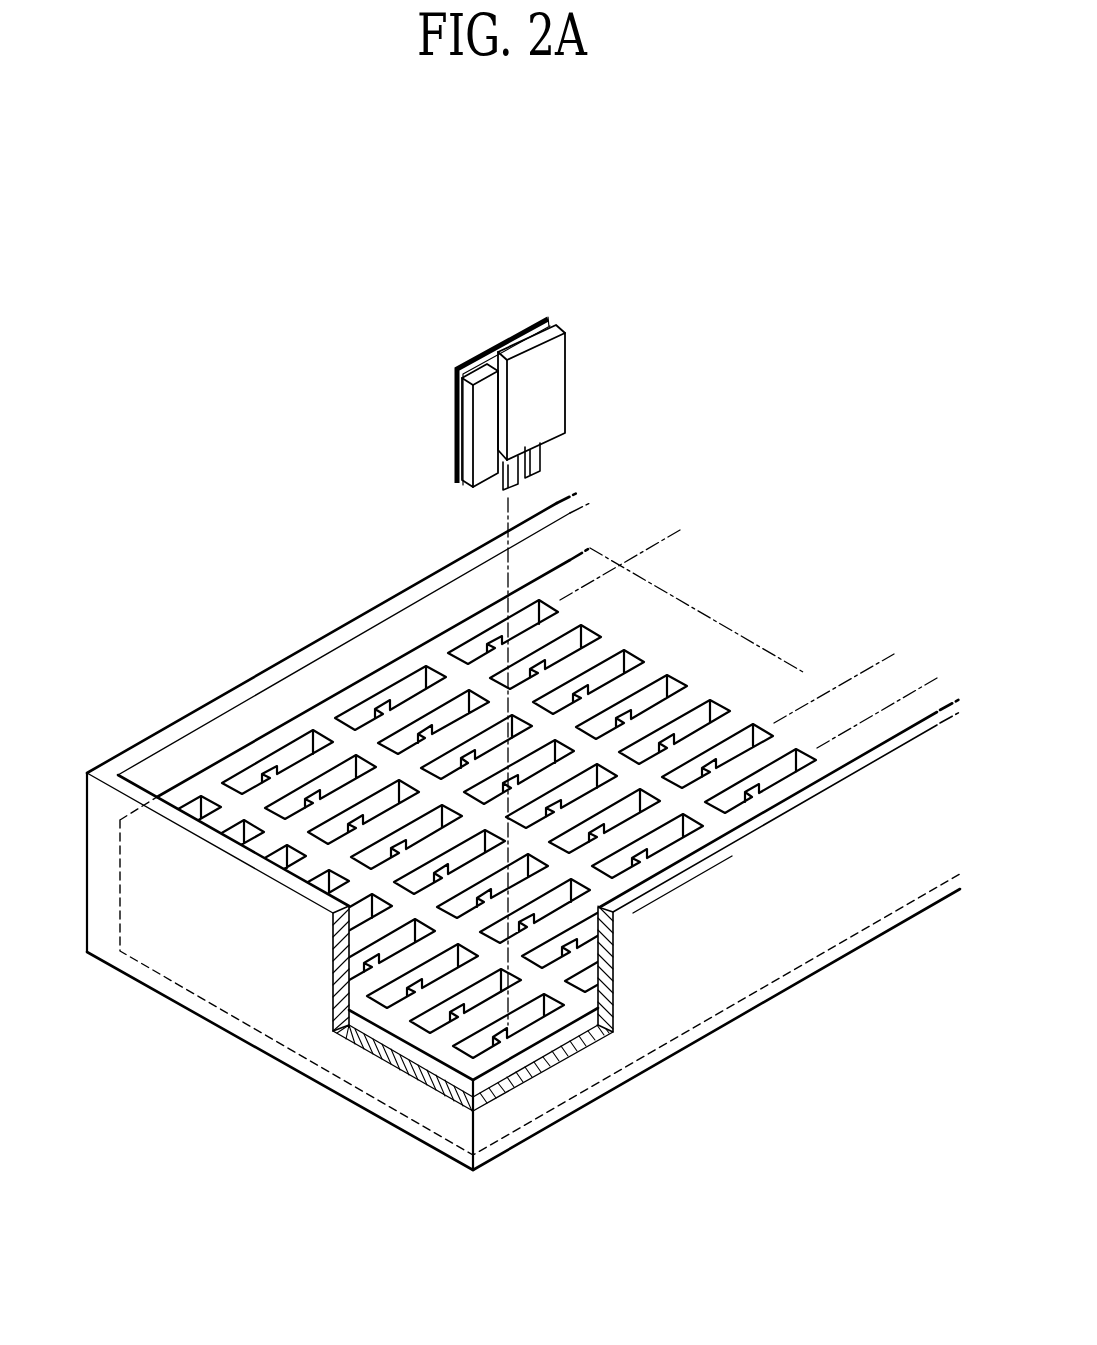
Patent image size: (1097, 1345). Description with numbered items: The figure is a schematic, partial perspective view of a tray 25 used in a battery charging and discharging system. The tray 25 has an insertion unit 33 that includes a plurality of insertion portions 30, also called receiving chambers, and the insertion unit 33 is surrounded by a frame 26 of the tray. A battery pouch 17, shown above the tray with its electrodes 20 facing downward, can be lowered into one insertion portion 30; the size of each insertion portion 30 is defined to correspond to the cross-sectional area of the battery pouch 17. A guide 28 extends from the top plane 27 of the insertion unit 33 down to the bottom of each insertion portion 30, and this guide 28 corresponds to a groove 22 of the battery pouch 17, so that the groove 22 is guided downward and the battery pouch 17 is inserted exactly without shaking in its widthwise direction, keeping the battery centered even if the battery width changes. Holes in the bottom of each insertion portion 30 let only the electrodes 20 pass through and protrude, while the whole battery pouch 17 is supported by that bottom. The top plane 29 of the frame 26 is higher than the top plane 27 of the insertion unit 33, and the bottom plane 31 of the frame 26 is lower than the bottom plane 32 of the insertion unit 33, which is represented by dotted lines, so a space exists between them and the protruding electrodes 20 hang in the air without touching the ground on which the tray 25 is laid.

The battery pouch 17 is at (579, 351).
The electrodes 20 is at (533, 459).
The groove 22 is at (489, 350).
The tray 25 is at (299, 609).
The frame 26 is at (234, 990).
The top plane 27 is at (448, 1054).
The guide 28 is at (267, 773).
The top plane 29 is at (160, 797).
The insertion portion 30 is at (403, 698).
The bottom plane 31 is at (742, 970).
The bottom plane 32 is at (570, 1098).
The insertion unit 33 is at (445, 656).